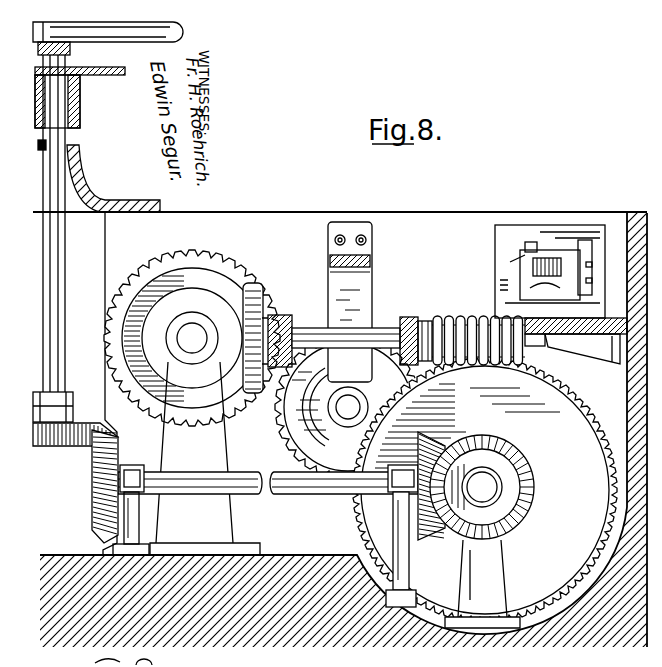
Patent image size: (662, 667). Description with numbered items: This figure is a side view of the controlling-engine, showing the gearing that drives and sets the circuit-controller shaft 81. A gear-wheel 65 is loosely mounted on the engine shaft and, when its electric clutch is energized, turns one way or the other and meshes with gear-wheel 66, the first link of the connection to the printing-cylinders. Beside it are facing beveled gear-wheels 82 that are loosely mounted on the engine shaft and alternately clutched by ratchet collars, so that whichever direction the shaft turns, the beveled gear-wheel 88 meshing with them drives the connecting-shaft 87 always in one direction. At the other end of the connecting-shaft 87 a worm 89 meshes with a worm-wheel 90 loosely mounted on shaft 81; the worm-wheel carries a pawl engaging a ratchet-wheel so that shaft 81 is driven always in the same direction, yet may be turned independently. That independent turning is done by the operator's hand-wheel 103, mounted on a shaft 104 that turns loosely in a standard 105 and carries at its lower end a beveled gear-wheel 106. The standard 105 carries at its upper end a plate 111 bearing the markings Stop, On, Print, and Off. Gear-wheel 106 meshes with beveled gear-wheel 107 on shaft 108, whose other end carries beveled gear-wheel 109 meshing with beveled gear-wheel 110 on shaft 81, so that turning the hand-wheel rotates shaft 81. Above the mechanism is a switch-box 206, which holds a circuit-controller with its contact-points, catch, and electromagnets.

The gear-wheel 65 is at (190, 257).
The gear-wheel 66 is at (192, 338).
The circuit-controller shaft 81 is at (482, 487).
The beveled gear-wheels 82 is at (238, 289).
The connecting-shaft 87 is at (306, 333).
The beveled gear-wheel 88 is at (266, 296).
The worm 89 is at (458, 318).
The worm-wheel 90 is at (584, 418).
The hand-wheel 103 is at (185, 33).
The shaft 104 is at (68, 311).
The standard 105 is at (80, 126).
The beveled gear-wheel 106 is at (78, 415).
The beveled gear-wheel 107 is at (92, 486).
The shaft 108 is at (152, 478).
The beveled gear-wheel 109 is at (428, 433).
The beveled gear-wheel 110 is at (536, 494).
The plate 111 is at (125, 61).
The switch-box 206 is at (521, 230).